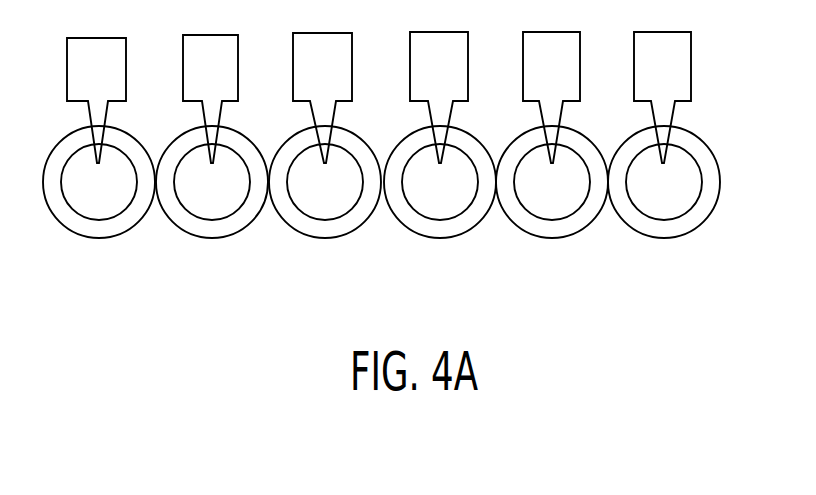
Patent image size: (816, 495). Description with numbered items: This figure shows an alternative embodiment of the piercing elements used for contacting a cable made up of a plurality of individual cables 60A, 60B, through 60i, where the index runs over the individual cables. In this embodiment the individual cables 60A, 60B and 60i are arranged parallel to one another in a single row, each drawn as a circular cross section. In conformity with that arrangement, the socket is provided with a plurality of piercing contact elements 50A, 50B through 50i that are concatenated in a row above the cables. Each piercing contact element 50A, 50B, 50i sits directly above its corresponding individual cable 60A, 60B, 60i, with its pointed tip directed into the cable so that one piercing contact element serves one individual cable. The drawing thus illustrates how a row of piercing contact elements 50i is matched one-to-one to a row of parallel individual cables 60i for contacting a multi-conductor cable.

The piercing contact element 50A is at (92, 112).
The piercing contact element 50B is at (205, 112).
The piercing contact element 50i is at (667, 108).
The individual cable 60A is at (107, 229).
The individual cable 60B is at (222, 229).
The individual cable 60i is at (663, 226).